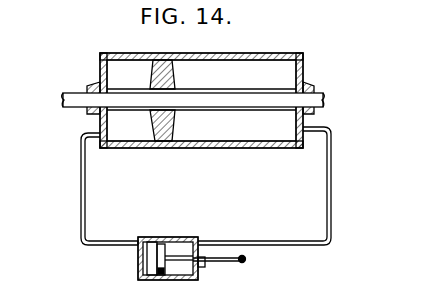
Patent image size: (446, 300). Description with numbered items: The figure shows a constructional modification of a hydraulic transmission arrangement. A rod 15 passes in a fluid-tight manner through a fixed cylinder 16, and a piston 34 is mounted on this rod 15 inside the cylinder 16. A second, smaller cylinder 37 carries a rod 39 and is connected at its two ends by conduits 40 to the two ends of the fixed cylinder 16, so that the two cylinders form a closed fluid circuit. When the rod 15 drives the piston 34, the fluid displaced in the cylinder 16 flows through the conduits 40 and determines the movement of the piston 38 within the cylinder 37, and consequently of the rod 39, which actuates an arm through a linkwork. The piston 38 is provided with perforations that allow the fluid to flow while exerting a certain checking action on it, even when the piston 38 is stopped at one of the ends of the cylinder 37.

The cylinder 16 is at (302, 70).
The piston 34 is at (150, 72).
The rod 15 is at (61, 99).
The conduits 40 is at (112, 250).
The piston 38 is at (150, 260).
The cylinder 37 is at (163, 248).
The rod 39 is at (222, 264).